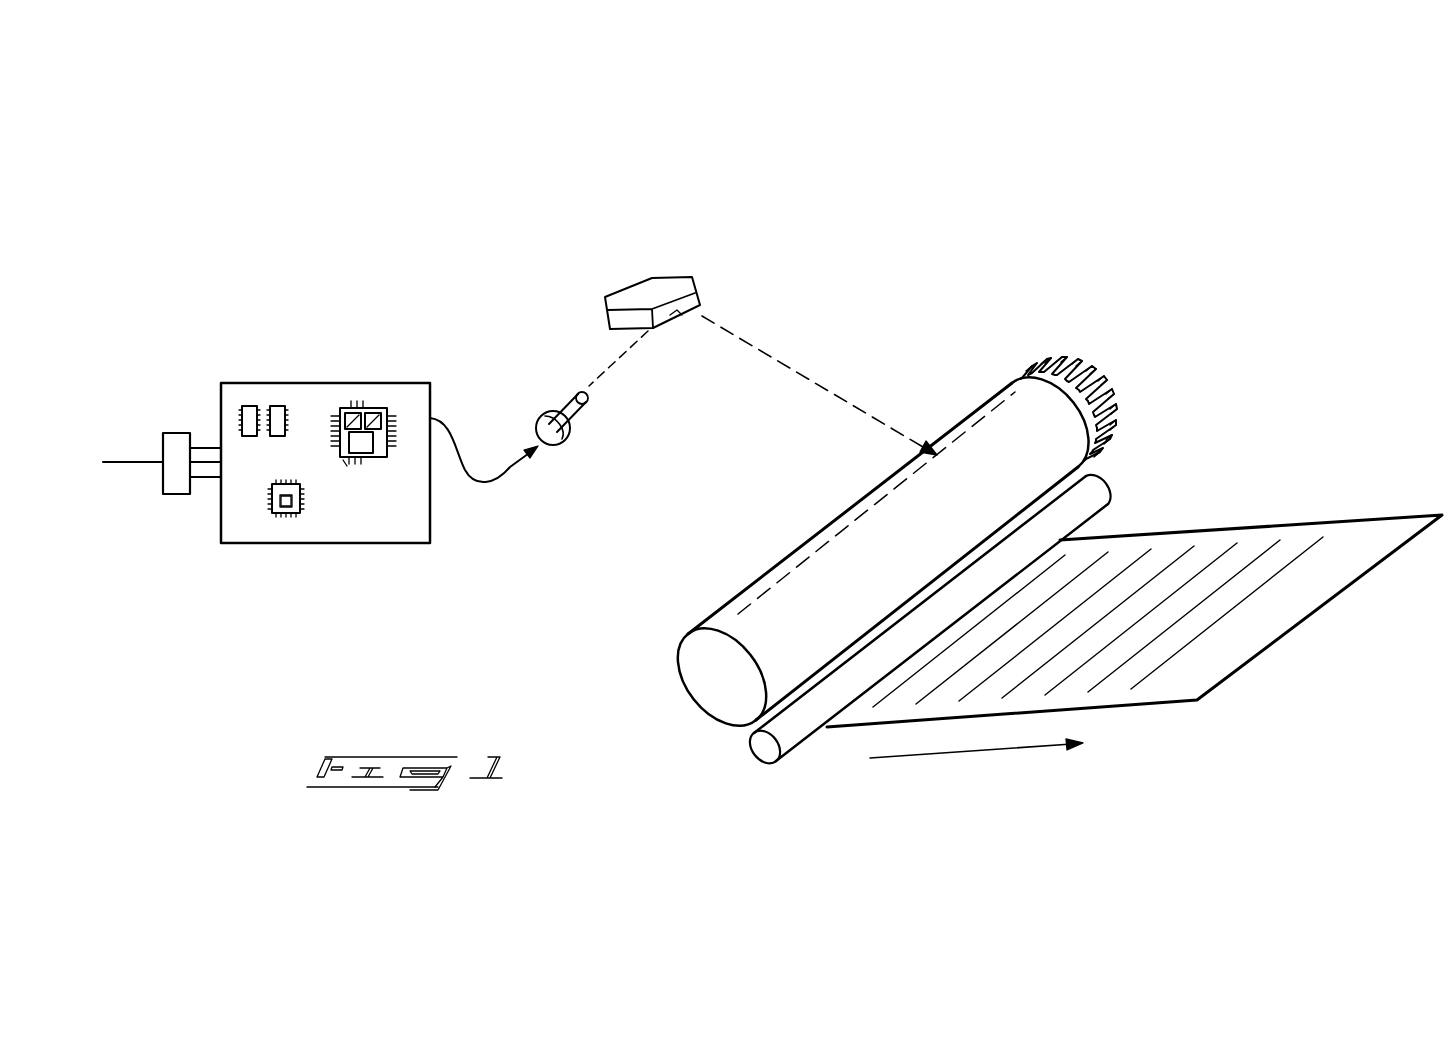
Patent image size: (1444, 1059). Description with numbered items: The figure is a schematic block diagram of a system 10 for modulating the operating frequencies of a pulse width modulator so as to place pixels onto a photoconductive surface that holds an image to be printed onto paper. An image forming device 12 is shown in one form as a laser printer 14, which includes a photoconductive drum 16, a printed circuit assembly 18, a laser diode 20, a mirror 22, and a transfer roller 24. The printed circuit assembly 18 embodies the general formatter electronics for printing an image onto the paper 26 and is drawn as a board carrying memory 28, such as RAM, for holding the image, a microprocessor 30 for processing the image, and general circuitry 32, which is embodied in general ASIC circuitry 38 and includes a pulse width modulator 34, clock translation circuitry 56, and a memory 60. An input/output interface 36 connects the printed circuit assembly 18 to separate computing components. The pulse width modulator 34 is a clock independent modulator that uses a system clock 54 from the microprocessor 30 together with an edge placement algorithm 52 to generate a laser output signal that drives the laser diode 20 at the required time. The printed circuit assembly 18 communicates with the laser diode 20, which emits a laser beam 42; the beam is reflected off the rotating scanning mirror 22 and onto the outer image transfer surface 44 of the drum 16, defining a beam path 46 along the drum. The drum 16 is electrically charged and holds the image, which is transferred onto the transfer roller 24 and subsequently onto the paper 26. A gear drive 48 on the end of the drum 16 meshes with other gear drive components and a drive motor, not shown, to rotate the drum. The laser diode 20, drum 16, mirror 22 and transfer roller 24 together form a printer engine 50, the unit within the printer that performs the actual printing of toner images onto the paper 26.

The system 10 is at (945, 174).
The image forming device 12 is at (1329, 232).
The laser printer 14 is at (708, 776).
The photoconductive drum 16 is at (1043, 467).
The printed circuit assembly 18 is at (221, 408).
The laser diode 20 is at (537, 420).
The mirror 22 is at (628, 283).
The transfer roller 24 is at (790, 732).
The paper 26 is at (1295, 522).
The memory 28 is at (247, 406).
The microprocessor 30 is at (272, 477).
The general circuitry 32 is at (342, 430).
The pulse width modulator 34 is at (339, 408).
The input/output interface 36 is at (180, 497).
The general ASIC circuitry 38 is at (347, 465).
The laser beam 42 is at (800, 378).
The image transfer surface 44 is at (917, 548).
The beam path 46 is at (817, 550).
The gear drive 48 is at (1097, 377).
The printer engine 50 is at (362, 655).
The edge placement algorithm 52 is at (354, 468).
The system clock 54 is at (288, 503).
The clock translation circuitry 56 is at (385, 412).
The memory 60 is at (373, 447).